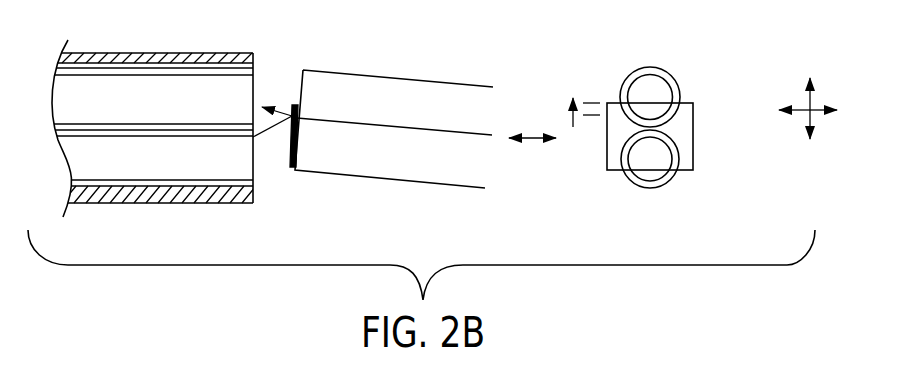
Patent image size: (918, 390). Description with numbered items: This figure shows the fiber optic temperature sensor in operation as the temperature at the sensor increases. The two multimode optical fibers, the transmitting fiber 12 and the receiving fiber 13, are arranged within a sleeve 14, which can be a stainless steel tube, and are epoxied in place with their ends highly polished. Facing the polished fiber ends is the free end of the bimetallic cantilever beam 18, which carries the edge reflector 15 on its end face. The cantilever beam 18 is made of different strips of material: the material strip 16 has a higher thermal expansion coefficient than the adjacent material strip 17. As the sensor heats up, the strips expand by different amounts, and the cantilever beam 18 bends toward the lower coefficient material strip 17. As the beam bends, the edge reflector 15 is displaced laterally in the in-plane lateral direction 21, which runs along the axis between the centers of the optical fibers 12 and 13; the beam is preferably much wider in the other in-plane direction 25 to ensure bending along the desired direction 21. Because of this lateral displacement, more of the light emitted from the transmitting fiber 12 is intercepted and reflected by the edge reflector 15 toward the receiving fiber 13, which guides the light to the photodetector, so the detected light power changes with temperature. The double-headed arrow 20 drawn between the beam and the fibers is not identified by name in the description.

The transmitting fiber 12 is at (144, 170).
The receiving fiber 13 is at (144, 112).
The sleeve 14 is at (185, 58).
The edge reflector 15 is at (281, 168).
The material strip 16 is at (381, 165).
The material strip 17 is at (381, 112).
The bimetallic cantilever beam 18 is at (432, 62).
The translation direction 20 is at (532, 141).
The in-plane lateral direction 21 is at (807, 97).
The other in-plane direction 25 is at (817, 113).